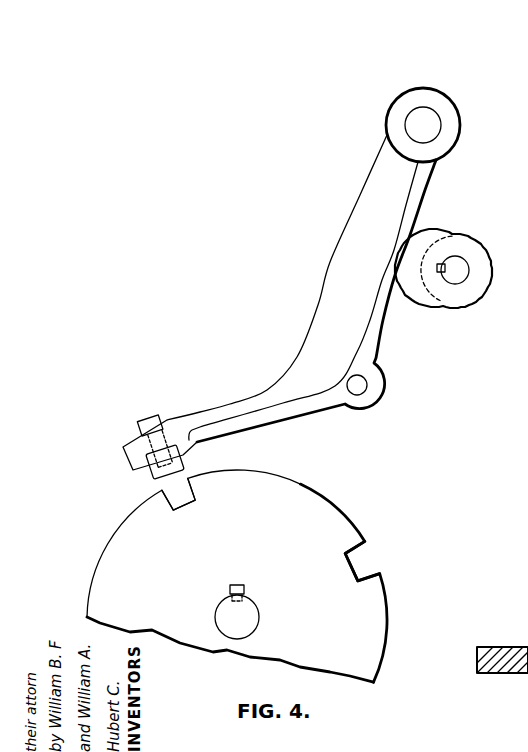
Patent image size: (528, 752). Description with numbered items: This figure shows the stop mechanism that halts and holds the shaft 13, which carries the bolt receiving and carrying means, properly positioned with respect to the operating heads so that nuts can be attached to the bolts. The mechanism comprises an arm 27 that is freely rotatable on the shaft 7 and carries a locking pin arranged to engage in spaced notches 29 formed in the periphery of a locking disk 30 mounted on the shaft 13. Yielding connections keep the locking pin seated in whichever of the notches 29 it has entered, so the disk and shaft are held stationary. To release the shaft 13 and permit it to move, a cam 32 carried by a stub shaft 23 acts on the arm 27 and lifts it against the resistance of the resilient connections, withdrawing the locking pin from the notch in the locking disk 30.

The shaft 7 is at (437, 123).
The shaft 13 is at (232, 628).
The stub shaft 23 is at (466, 262).
The arm 27 is at (330, 257).
The notches 29 is at (160, 490).
The locking disk 30 is at (325, 505).
The cam 32 is at (432, 232).